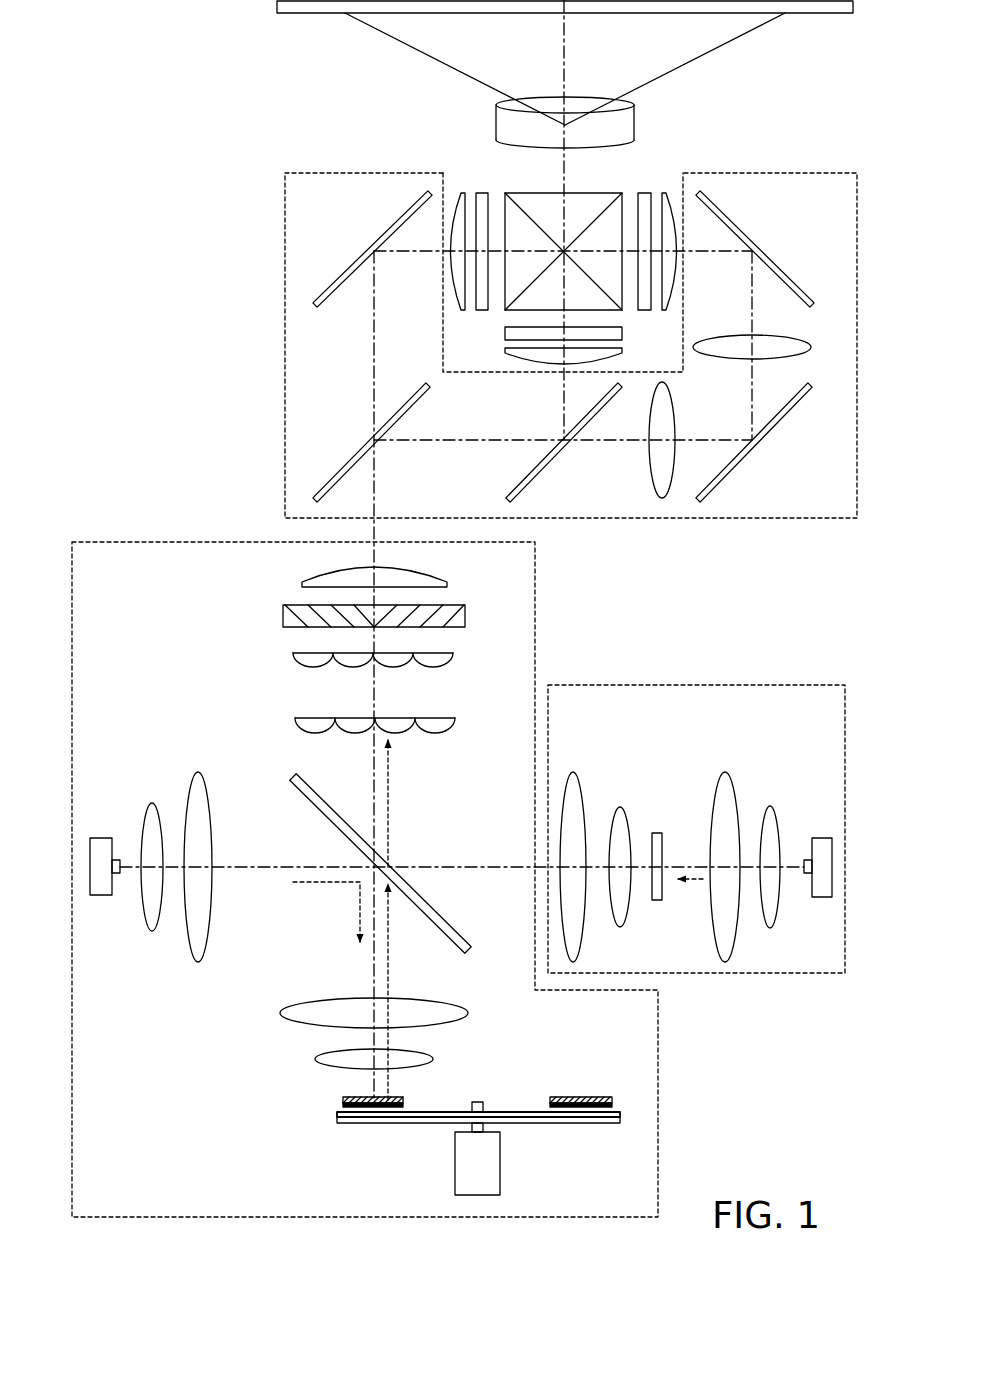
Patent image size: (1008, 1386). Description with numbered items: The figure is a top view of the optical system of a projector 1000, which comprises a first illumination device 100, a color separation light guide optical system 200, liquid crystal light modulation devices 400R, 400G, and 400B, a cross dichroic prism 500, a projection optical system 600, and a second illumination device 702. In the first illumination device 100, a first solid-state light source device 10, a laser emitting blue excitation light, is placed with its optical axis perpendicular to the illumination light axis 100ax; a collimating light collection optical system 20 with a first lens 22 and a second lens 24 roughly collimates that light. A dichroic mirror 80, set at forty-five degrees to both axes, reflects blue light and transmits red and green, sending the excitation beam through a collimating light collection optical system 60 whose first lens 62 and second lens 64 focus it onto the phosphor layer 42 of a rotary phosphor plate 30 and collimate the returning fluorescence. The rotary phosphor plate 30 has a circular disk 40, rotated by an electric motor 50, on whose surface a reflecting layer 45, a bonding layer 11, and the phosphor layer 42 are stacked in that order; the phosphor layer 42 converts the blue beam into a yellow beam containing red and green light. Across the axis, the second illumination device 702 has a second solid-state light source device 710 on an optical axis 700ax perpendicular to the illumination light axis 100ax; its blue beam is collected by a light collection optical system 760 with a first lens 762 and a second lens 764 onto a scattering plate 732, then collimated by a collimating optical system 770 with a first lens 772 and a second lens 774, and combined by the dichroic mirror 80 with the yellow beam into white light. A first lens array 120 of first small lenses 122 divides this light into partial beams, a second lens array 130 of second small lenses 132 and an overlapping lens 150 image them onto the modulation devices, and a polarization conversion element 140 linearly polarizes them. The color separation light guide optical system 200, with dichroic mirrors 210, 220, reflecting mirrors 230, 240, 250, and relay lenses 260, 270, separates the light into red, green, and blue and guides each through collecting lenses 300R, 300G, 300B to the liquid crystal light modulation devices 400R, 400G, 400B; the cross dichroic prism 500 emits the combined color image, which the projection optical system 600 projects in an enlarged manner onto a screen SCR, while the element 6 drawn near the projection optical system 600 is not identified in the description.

The projector 1000 is at (240, 92).
The screen SCR is at (820, 14).
The projection optical axis / image light 6 is at (548, 105).
The projection optical system 600 is at (496, 125).
The cross dichroic prism 500 is at (610, 197).
The liquid crystal light modulation device 400R is at (482, 193).
The liquid crystal light modulation device 400G is at (505, 333).
The liquid crystal light modulation device 400B is at (645, 193).
The collecting lens 300R is at (455, 197).
The collecting lens 300G is at (505, 352).
The collecting lens 300B is at (673, 195).
The color separation light guide optical system 200 is at (805, 519).
The dichroic mirror 210 is at (343, 466).
The dichroic mirror 220 is at (540, 468).
The reflecting mirror 230 is at (320, 300).
The reflecting mirror 240 is at (768, 432).
The reflecting mirror 250 is at (812, 300).
The relay lens 260 is at (650, 458).
The relay lens 270 is at (780, 343).
The first illumination device 100 is at (658, 1135).
The illumination light axis 100ax is at (374, 540).
The overlapping lens 150 is at (437, 573).
The polarization conversion element 140 is at (455, 605).
The second lens array 130 is at (379, 654).
The second small lens 132 is at (300, 660).
The first lens array 120 is at (379, 721).
The first small lens 122 is at (300, 726).
The first solid-state light source device 10 is at (122, 835).
The collimating light collection optical system 20 is at (213, 716).
The first lens 22 is at (153, 805).
The second lens 24 is at (200, 772).
The dichroic mirror 80 is at (446, 928).
The optical axis 700ax is at (477, 867).
The rotary phosphor plate 30 is at (540, 1065).
The collimating light collection optical system 60 is at (205, 992).
The first lens 62 is at (316, 1053).
The second lens 64 is at (283, 1013).
The phosphor layer 42 is at (343, 1100).
The bonding layer 11 is at (343, 1106).
The reflecting layer 45 is at (337, 1114).
The circular disk 40 is at (337, 1122).
The electric motor 50 is at (501, 1172).
The second illumination device 702 is at (805, 975).
The second solid-state light source device 710 is at (797, 840).
The light collection optical system 760 is at (810, 738).
The first lens 762 is at (774, 808).
The second lens 764 is at (730, 780).
The scattering plate 732 is at (657, 833).
The collimating optical system 770 is at (658, 738).
The first lens 772 is at (622, 810).
The second lens 774 is at (578, 780).